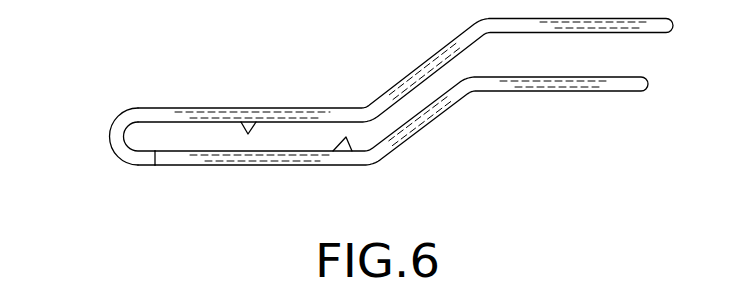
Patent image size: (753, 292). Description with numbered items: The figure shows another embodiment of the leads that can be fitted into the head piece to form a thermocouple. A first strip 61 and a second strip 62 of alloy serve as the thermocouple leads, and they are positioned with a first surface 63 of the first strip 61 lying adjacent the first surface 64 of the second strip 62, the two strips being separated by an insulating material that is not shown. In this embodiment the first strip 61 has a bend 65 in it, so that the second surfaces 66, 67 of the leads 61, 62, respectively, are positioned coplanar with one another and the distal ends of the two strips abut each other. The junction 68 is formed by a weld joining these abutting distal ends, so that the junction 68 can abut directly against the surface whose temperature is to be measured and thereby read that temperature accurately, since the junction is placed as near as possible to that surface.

The first strip 61 is at (328, 107).
The second strip 62 is at (548, 91).
The first surface of strip 61 63 is at (243, 123).
The first surface of strip 62 64 is at (347, 142).
The bend 65 is at (112, 130).
The second surface of lead 61 66 is at (143, 167).
The second surface of lead 62 67 is at (256, 166).
The junction 68 is at (157, 166).